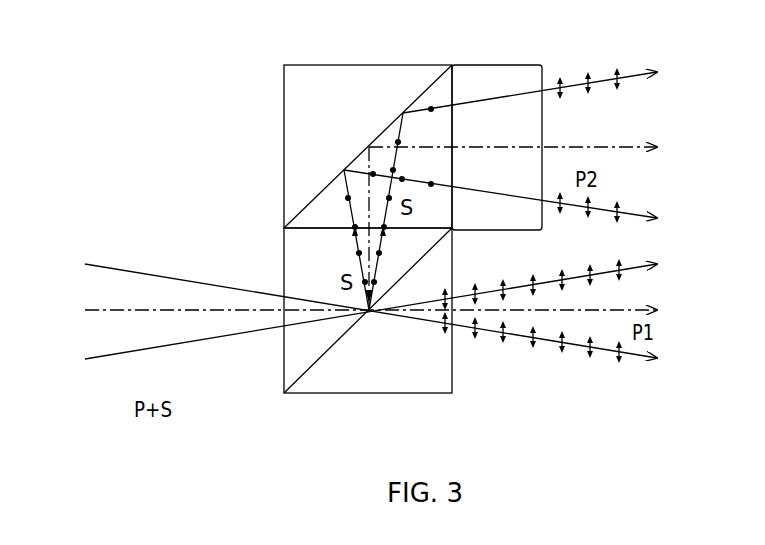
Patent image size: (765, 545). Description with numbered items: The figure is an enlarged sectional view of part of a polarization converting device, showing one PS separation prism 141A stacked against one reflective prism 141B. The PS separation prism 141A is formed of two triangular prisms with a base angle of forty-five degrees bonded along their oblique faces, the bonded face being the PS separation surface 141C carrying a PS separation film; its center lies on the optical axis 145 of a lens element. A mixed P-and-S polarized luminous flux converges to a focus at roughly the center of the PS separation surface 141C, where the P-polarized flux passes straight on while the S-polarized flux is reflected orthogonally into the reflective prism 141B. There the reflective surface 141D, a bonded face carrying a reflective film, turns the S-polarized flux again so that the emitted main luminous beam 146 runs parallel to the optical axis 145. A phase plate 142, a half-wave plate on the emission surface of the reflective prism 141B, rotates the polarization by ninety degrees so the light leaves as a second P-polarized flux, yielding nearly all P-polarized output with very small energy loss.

The PS separation prism 141A is at (284, 234).
The reflective prism 141B is at (284, 130).
The PS separation surface 141C is at (327, 350).
The reflective surface 141D is at (415, 100).
The phase plate 142 is at (493, 64).
The optical axis 145 is at (110, 310).
The main luminous beam 146 is at (615, 145).